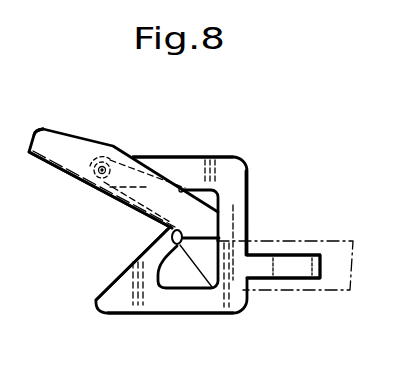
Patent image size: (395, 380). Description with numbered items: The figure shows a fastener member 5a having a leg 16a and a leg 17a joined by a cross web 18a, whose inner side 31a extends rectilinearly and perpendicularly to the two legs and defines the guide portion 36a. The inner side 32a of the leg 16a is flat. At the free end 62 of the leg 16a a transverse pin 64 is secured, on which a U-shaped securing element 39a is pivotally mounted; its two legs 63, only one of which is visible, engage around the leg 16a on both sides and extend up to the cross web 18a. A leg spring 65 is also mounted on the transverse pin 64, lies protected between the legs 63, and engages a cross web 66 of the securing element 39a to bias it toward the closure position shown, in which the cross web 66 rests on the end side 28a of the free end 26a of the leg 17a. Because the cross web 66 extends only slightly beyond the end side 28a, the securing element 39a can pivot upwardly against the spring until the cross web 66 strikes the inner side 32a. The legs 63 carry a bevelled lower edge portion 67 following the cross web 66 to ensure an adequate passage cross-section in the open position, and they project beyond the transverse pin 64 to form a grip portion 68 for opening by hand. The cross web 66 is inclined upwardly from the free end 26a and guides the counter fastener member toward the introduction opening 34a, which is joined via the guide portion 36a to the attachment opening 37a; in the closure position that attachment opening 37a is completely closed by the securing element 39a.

The fastener member 5a is at (255, 212).
The cross web 18a is at (248, 193).
The leg 16a is at (187, 157).
The inner side 32a is at (204, 173).
The guide portion 36a is at (218, 196).
The inner side 31a is at (217, 257).
The leg 17a is at (173, 305).
The free end 26a is at (132, 278).
The attachment opening 37a is at (172, 282).
The end side 28a is at (197, 239).
The bevelled lower edge portion 67 is at (234, 282).
The legs 63 is at (68, 145).
The securing element 39a is at (45, 125).
The grip portion 68 is at (43, 160).
The leg spring 65 is at (147, 221).
The free end 62 is at (143, 158).
The cross web 66 is at (123, 190).
The transverse pin 64 is at (93, 182).
The introduction opening 34a is at (112, 231).